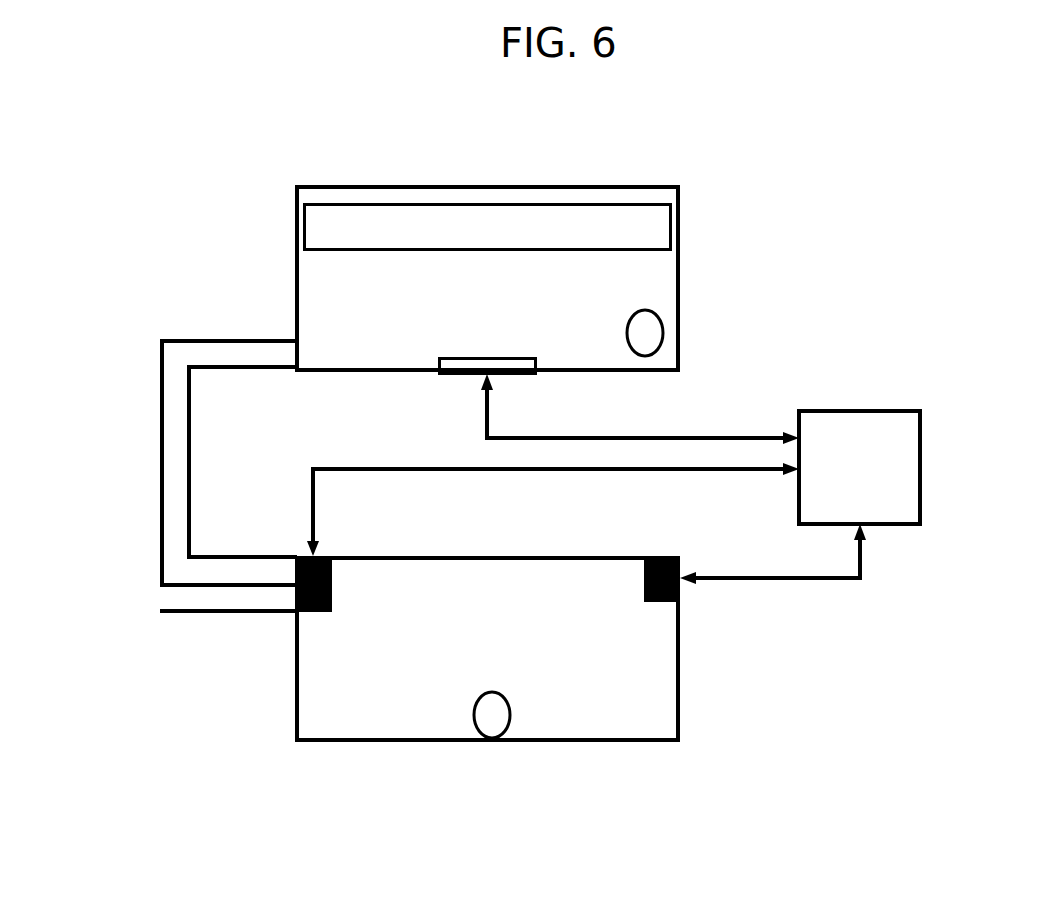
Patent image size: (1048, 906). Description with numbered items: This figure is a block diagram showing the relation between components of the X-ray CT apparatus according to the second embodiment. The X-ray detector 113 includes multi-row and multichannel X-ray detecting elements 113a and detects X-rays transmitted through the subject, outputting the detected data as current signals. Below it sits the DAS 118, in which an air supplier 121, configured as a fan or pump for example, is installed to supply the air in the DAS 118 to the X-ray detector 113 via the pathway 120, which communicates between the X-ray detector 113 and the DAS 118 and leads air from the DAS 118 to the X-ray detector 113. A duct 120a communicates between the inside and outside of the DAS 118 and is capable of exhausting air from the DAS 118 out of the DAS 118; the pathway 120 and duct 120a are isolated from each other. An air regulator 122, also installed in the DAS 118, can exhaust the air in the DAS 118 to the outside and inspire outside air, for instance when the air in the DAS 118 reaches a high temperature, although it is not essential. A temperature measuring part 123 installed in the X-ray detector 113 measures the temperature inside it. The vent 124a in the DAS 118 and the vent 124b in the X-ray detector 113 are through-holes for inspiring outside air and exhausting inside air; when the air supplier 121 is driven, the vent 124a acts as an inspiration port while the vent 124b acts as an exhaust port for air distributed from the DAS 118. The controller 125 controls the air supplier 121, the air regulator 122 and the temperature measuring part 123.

The X-ray detector 113 is at (657, 190).
The X-ray detecting elements 113a is at (314, 239).
The DAS 118 is at (663, 727).
The pathway 120 is at (175, 440).
The duct 120a is at (213, 602).
The air supplier 121 is at (320, 613).
The air regulator 122 is at (683, 590).
The temperature measuring part 123 is at (462, 368).
The vent 124a is at (495, 725).
The vent 124b is at (653, 331).
The controller 125 is at (903, 465).